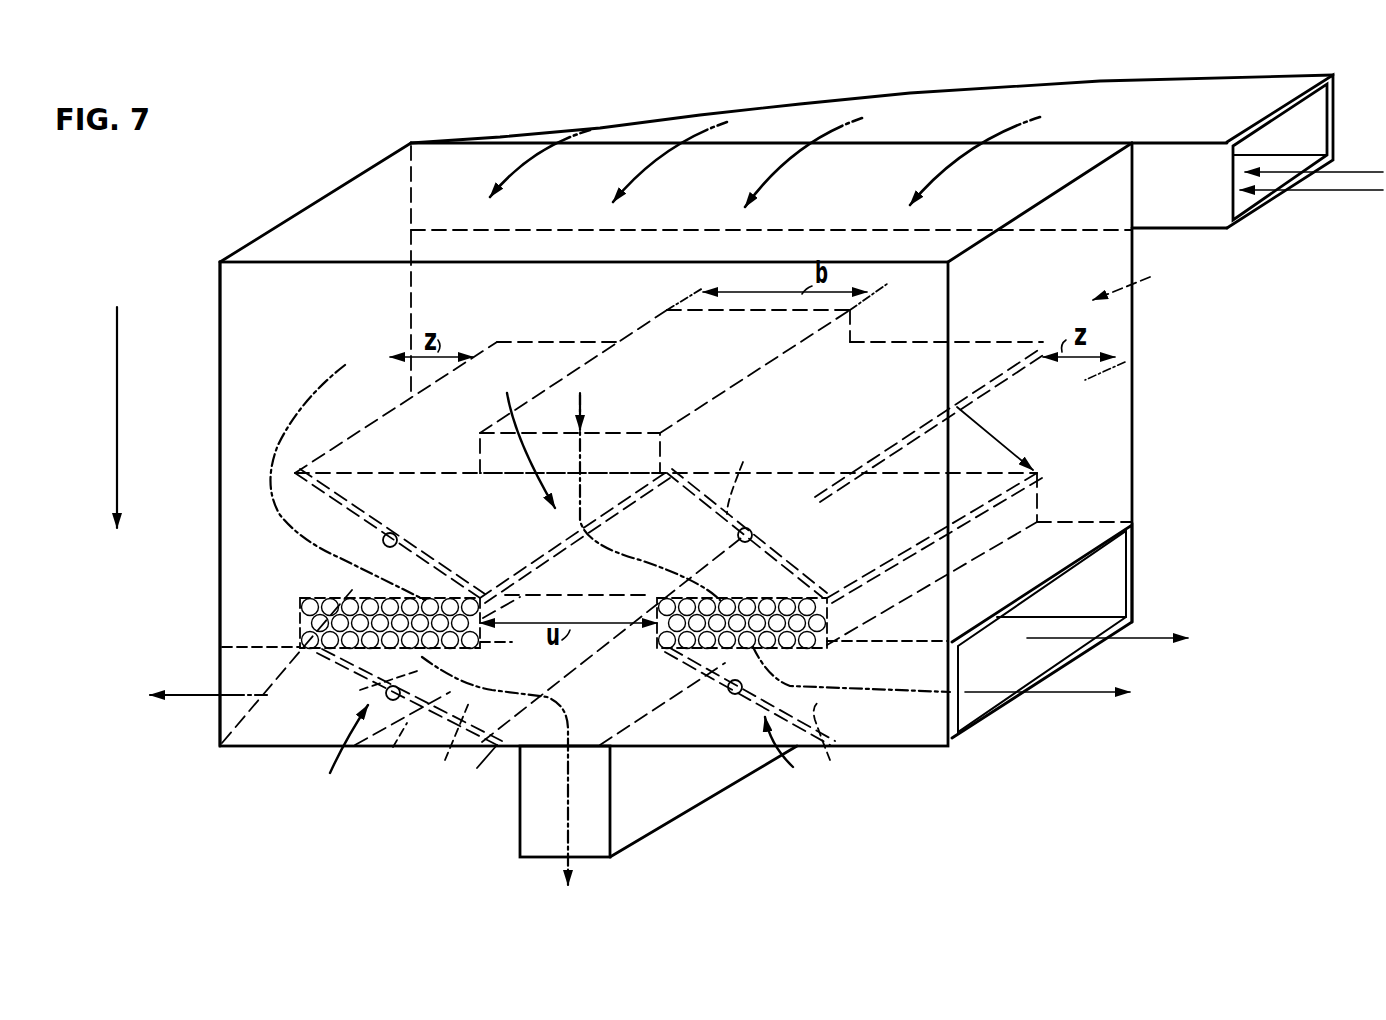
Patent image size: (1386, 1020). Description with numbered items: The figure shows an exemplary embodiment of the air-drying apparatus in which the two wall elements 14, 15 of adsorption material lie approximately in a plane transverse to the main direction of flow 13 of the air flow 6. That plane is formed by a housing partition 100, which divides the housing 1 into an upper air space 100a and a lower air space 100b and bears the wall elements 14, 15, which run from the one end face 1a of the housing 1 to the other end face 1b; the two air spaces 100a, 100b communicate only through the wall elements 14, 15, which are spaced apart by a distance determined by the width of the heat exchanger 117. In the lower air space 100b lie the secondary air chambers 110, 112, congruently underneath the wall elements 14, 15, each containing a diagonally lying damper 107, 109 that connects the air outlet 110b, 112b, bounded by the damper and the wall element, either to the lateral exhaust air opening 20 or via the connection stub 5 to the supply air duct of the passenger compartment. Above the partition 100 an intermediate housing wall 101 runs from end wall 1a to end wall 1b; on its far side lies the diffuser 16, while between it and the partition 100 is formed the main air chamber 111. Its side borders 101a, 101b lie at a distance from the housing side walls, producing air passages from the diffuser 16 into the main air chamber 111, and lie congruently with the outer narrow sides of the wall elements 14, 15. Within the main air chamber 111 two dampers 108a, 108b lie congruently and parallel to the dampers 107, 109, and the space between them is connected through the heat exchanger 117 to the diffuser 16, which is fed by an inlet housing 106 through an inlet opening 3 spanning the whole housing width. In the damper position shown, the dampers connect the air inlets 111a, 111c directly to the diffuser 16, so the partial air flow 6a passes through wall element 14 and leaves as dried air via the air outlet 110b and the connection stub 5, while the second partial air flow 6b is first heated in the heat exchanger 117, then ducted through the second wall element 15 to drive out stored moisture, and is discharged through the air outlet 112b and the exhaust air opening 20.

The housing 1 is at (318, 205).
The end face of the housing 1a is at (238, 358).
The end face of the housing 1b is at (1133, 330).
The inlet opening 3 is at (445, 167).
The connection stub 5 is at (686, 778).
The air flow 6 is at (1335, 174).
The partial air flow 6a is at (276, 446).
The second partial air flow 6b is at (603, 393).
The main direction of flow 13 is at (118, 387).
The wall element 14 is at (300, 626).
The wall element 15 is at (840, 626).
The diffuser 16 is at (594, 309).
The exhaust air opening 20 is at (1118, 564).
The housing partition 100 is at (1085, 524).
The upper air space 100a is at (1153, 277).
The lower air space 100b is at (590, 738).
The intermediate housing wall 101 is at (862, 349).
The side border of the intermediate housing wall 101a is at (374, 427).
The side border of the intermediate housing wall 101b is at (896, 440).
The inlet housing 106 is at (1001, 96).
The damper 107 is at (412, 744).
The damper 108a is at (506, 537).
The damper 108b is at (891, 537).
The damper 109 is at (844, 722).
The secondary air chamber 110 is at (338, 762).
The air outlet 110b is at (387, 728).
The main air chamber 111 is at (520, 439).
The air inlet 111a is at (638, 584).
The air inlet 111c is at (337, 575).
The secondary air chamber 112 is at (793, 775).
The air outlet 112b is at (842, 751).
The heat exchanger 117 is at (716, 361).